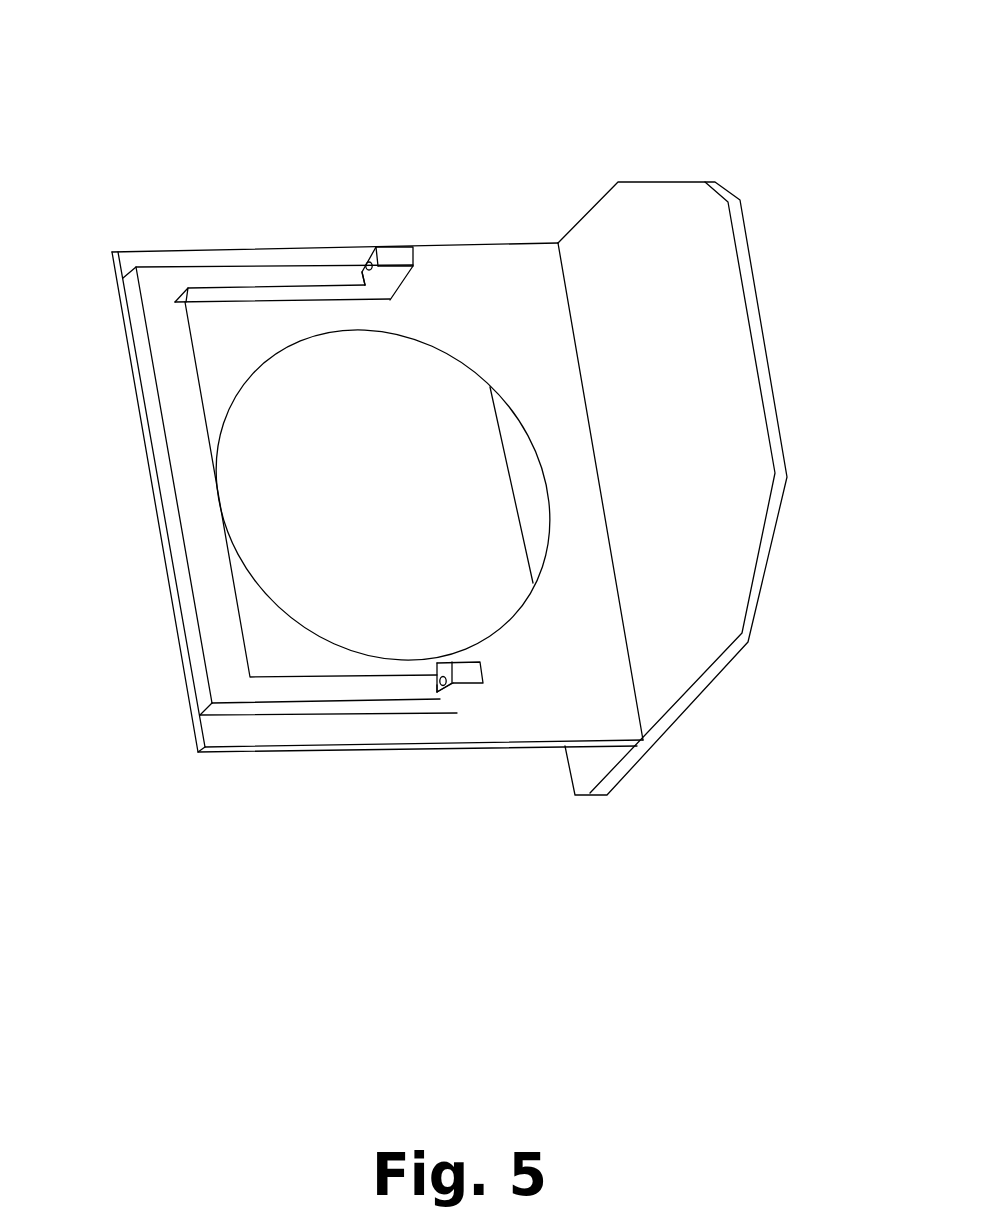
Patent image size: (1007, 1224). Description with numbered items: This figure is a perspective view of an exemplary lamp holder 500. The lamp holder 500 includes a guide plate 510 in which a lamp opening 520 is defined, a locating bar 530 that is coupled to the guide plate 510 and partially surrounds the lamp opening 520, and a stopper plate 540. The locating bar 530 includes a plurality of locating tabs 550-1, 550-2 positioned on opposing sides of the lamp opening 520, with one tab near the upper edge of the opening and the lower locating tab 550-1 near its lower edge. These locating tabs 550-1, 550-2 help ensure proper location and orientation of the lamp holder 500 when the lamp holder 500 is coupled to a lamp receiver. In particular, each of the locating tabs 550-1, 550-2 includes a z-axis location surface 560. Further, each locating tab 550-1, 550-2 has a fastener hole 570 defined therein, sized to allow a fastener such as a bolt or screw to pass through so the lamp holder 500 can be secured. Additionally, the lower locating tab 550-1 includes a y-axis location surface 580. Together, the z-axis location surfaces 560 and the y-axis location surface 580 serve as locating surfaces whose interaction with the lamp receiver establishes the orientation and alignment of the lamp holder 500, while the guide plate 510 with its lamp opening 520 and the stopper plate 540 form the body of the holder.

The lamp holder 500 is at (258, 131).
The guide plate 510 is at (320, 764).
The lamp opening 520 is at (421, 396).
The locating bar 530 is at (180, 503).
The stopper plate 540 is at (628, 250).
The lower locating tab 550-1 is at (470, 695).
The locating tab 550-2 is at (399, 234).
The z-axis location surface 560 is at (375, 248).
The fastener hole 570 is at (356, 277).
The y-axis location surface 580 is at (460, 693).